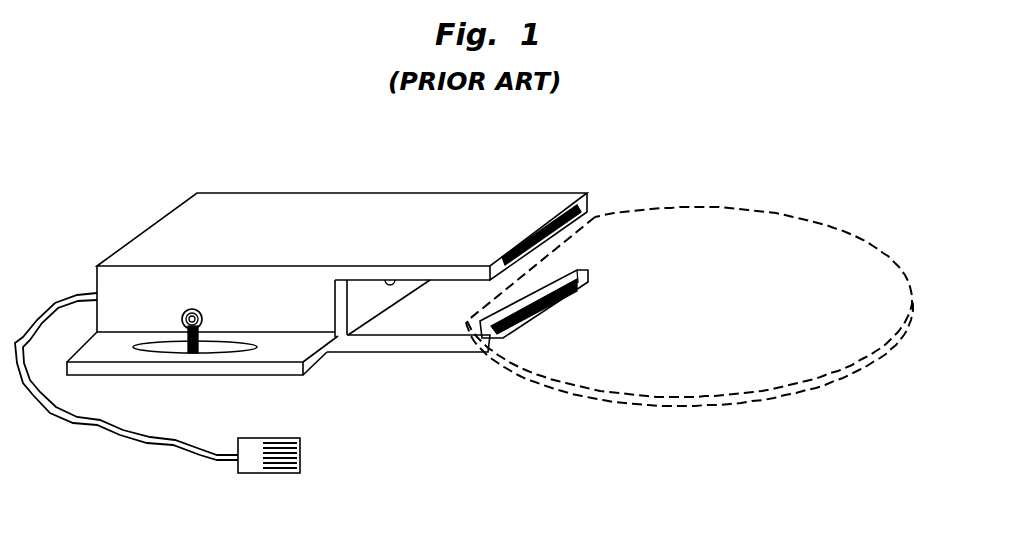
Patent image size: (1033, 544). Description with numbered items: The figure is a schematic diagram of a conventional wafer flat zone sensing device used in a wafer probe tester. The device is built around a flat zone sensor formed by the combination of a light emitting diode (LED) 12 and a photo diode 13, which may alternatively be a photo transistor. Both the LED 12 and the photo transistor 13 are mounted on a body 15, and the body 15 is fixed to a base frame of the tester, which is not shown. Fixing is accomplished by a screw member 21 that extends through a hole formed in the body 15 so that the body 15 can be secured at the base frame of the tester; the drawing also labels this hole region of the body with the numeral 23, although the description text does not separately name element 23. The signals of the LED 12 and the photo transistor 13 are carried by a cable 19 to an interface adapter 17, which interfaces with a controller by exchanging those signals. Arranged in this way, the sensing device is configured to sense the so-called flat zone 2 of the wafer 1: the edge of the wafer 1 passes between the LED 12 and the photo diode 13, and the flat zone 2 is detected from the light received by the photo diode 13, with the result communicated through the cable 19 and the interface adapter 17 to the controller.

The wafer 1 is at (830, 345).
The flat zone 2 is at (535, 243).
The light emitting diode 12 is at (572, 246).
The photo diode 13 is at (537, 313).
The body 15 is at (293, 222).
The interface adapter 17 is at (249, 463).
The cable 19 is at (63, 418).
The screw member 21 is at (187, 308).
The disc receiving hole 23 is at (232, 347).